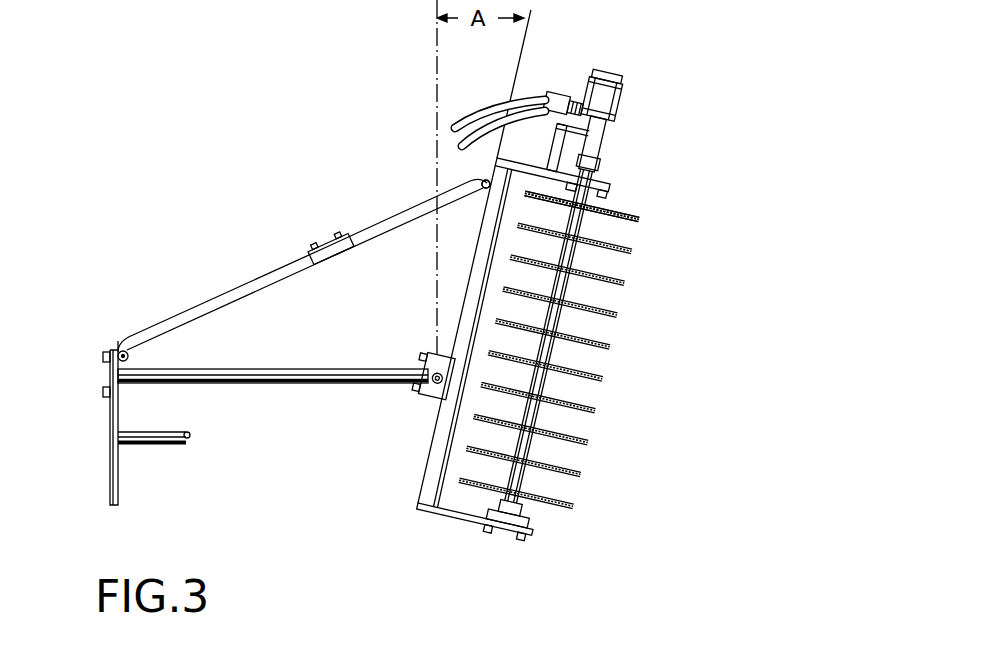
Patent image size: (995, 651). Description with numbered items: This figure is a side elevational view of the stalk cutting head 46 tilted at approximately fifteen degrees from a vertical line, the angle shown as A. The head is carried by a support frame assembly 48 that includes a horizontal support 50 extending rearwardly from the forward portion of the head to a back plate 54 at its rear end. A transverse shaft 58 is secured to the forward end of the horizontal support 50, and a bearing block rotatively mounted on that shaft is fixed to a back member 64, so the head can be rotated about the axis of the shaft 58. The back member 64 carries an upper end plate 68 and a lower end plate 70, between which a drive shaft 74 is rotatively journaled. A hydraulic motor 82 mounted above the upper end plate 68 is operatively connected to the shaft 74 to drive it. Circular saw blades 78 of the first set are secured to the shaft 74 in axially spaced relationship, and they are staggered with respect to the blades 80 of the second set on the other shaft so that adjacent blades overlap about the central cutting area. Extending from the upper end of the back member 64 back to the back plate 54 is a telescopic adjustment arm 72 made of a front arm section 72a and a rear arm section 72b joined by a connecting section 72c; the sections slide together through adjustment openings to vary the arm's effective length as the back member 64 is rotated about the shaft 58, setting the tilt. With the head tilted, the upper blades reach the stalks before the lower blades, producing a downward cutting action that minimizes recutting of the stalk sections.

The stalk cutting head 46 is at (645, 50).
The support frame assembly 48 is at (352, 425).
The horizontal support 50 is at (273, 384).
The back plate 54 is at (112, 378).
The transverse shaft 58 is at (428, 400).
The back member 64 is at (430, 478).
The upper end plate 68 is at (527, 157).
The lower end plate 70 is at (463, 513).
The telescopic adjustment arm 72 is at (242, 252).
The front arm section 72a is at (385, 219).
The rear arm section 72b is at (191, 308).
The connecting section 72c is at (327, 241).
The drive shaft 74 is at (522, 482).
The circular saw blade 78 is at (639, 219).
The circular saw blade 80 is at (630, 251).
The hydraulic motor 82 is at (622, 108).